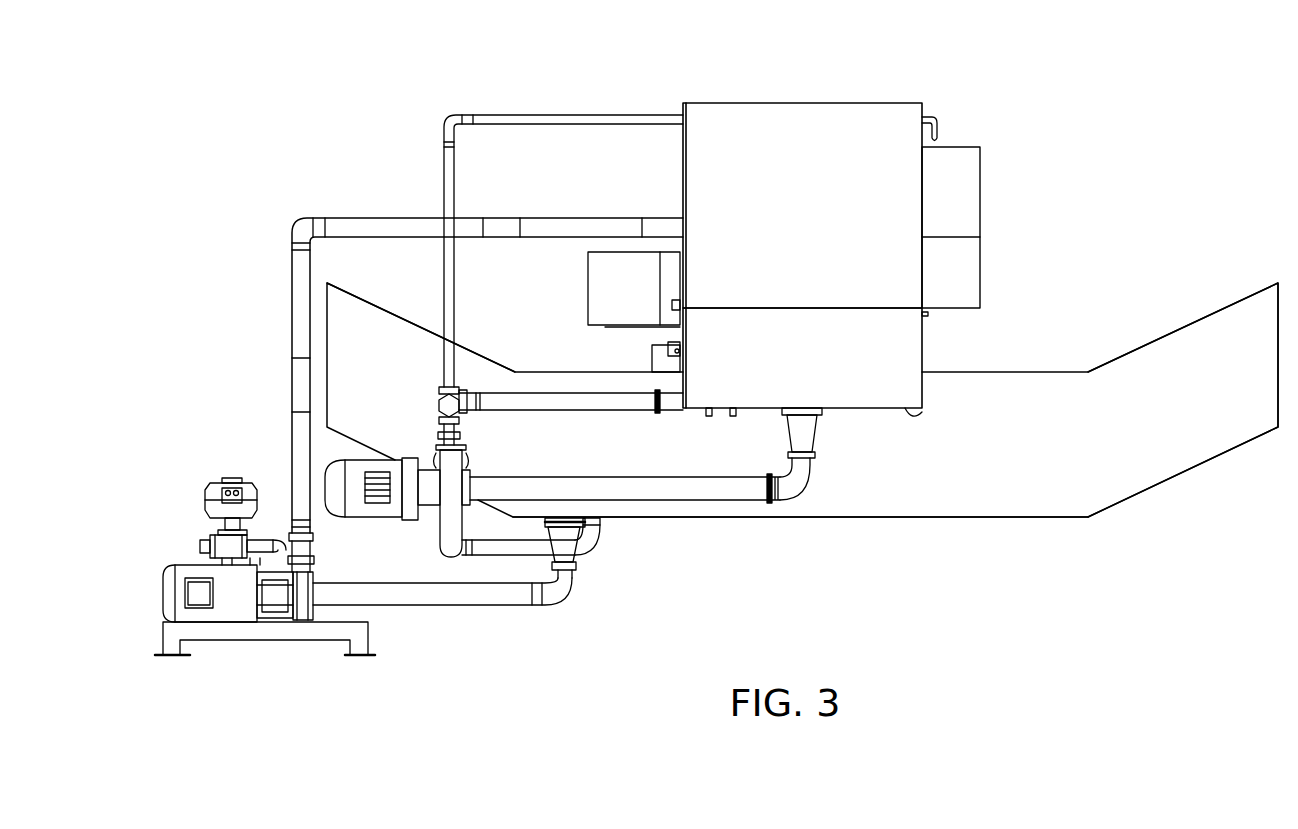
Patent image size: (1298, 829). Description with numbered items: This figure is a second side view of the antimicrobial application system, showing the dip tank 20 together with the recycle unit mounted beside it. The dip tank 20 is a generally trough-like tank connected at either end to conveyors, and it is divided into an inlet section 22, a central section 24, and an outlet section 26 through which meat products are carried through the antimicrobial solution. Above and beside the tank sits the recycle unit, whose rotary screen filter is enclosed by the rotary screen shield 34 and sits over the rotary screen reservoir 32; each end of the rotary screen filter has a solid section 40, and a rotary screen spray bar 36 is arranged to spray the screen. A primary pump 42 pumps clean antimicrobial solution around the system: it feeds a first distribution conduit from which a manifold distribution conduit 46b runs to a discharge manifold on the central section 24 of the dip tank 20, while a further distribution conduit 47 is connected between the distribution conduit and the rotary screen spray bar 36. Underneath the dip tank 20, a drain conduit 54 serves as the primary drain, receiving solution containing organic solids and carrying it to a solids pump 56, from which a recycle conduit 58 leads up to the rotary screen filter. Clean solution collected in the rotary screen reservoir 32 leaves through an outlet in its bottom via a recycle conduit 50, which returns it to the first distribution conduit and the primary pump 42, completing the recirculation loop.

The dip tank 20 is at (1018, 460).
The inlet section 22 is at (1206, 420).
The central section 24 is at (903, 495).
The outlet section 26 is at (373, 322).
The rotary screen reservoir 32 is at (816, 373).
The rotary screen shield 34 is at (816, 223).
The rotary screen spray bar 36 is at (946, 118).
The solid section 40 is at (965, 180).
The primary pump 42 is at (360, 506).
The manifold distribution conduit 46b is at (544, 400).
The further distribution conduit 47 is at (514, 116).
The recycle conduit 50 is at (730, 492).
The drain conduit 54 is at (490, 598).
The solids pump 56 is at (178, 572).
The recycle conduit 58 is at (292, 274).